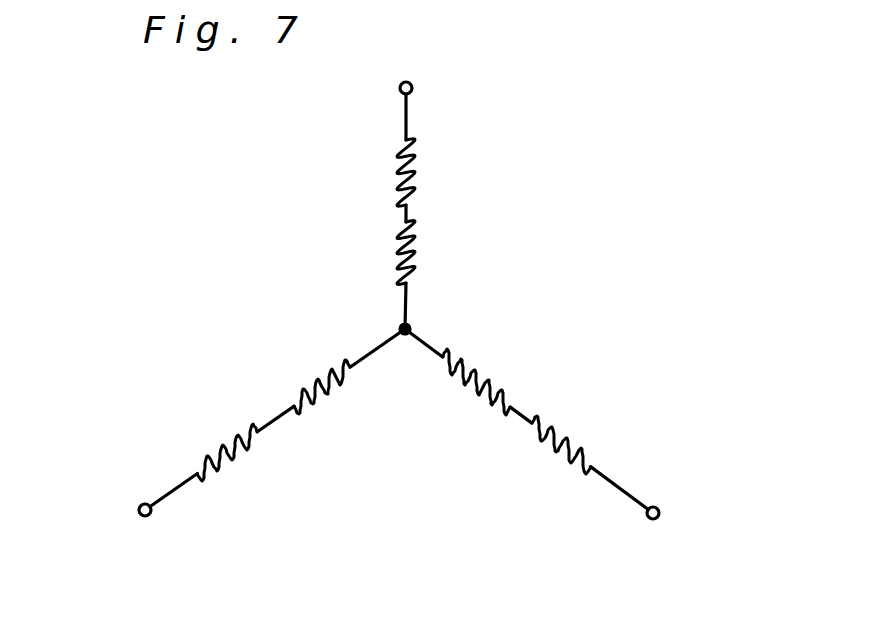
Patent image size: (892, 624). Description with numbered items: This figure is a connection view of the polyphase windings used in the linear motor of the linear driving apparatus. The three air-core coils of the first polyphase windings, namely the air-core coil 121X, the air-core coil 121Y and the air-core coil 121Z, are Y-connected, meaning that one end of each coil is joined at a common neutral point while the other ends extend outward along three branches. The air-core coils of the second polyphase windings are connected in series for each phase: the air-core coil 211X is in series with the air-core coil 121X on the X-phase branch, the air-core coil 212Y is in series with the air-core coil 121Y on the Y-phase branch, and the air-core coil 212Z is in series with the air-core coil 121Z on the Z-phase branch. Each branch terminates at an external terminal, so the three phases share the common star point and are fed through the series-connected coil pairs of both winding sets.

The air-core coil 211X is at (412, 158).
The air-core coil 121X is at (412, 245).
The air-core coil 121Y is at (487, 375).
The air-core coil 212Y is at (572, 442).
The air-core coil 121Z is at (305, 383).
The air-core coil 212Z is at (207, 457).